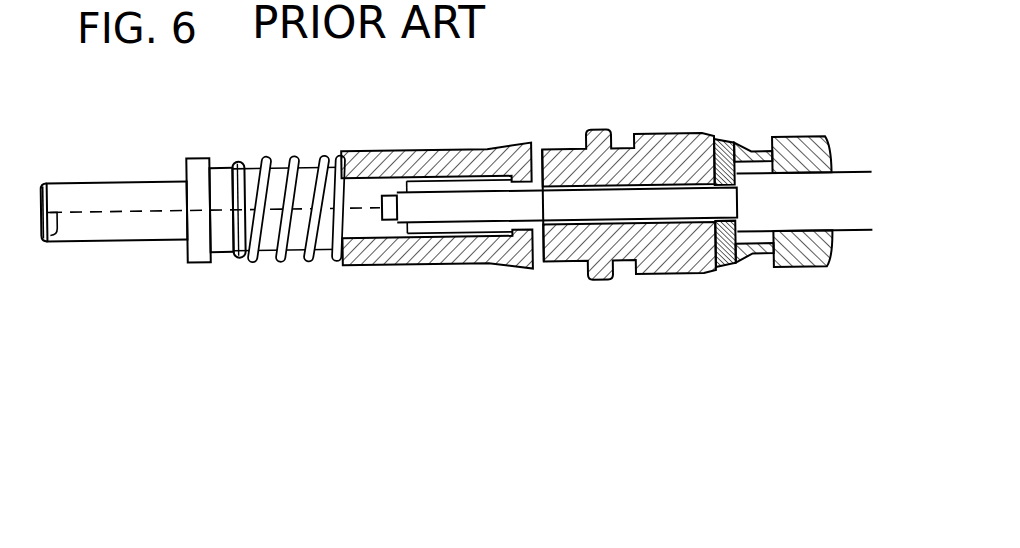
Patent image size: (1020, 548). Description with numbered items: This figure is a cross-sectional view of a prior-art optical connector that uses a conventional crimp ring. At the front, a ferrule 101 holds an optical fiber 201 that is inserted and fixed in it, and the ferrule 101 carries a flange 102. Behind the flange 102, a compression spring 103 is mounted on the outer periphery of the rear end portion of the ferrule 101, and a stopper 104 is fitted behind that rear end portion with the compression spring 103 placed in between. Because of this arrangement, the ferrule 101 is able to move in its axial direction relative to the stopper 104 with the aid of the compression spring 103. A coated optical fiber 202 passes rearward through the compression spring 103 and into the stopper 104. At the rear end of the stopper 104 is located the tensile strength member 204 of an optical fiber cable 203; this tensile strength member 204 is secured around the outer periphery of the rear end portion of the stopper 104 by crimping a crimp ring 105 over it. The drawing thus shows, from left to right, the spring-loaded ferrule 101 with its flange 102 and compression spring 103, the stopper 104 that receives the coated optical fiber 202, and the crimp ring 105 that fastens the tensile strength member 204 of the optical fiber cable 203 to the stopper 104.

The ferrule 101 is at (101, 230).
The flange 102 is at (200, 262).
The compression spring 103 is at (283, 262).
The stopper 104 is at (430, 265).
The crimp ring 105 is at (745, 280).
The optical fiber 201 is at (40, 240).
The coated optical fiber 202 is at (525, 203).
The optical fiber cable 203 is at (853, 214).
The tensile strength member 204 is at (732, 157).